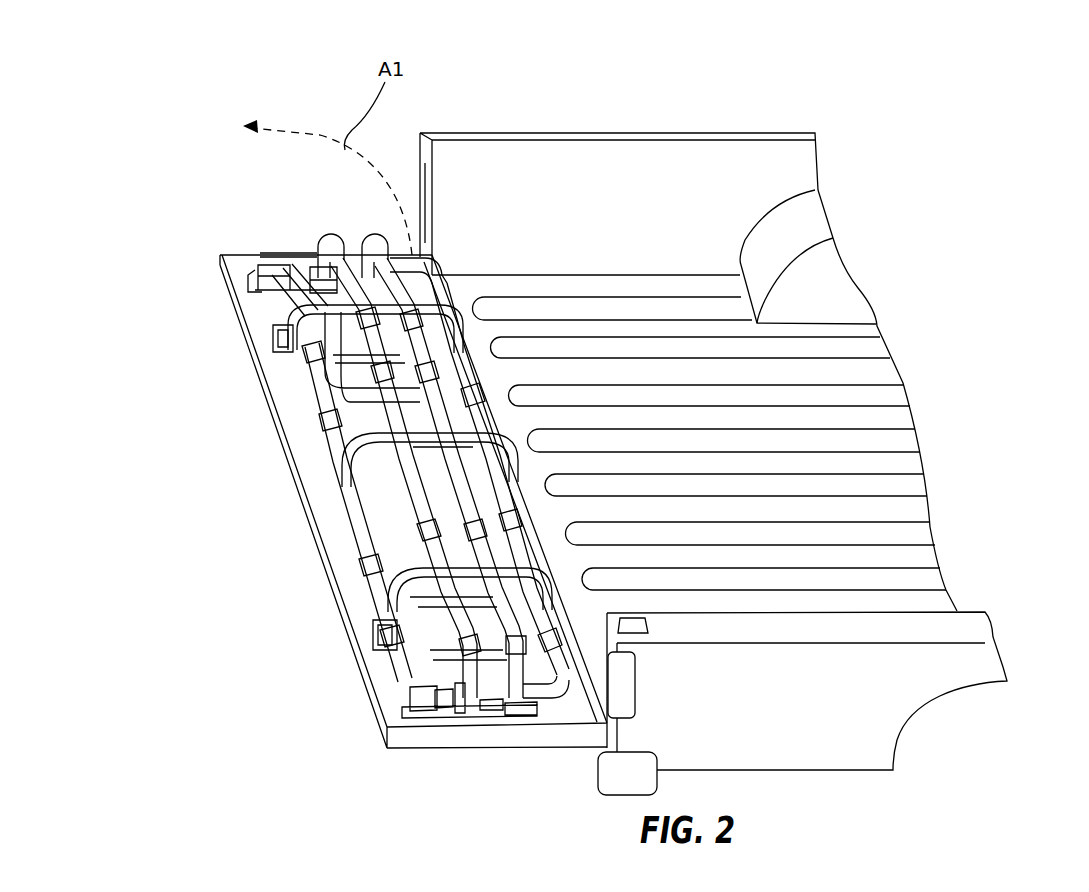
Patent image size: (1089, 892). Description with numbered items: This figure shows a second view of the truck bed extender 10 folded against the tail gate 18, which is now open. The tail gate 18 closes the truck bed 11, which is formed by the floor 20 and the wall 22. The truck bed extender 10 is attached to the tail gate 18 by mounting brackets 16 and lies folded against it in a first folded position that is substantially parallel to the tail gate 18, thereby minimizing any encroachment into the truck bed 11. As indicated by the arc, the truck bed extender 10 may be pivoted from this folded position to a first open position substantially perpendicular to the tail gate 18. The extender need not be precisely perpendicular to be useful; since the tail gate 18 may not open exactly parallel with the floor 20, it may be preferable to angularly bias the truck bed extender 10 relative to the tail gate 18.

The truck bed extender 10 is at (340, 450).
The truck bed 11 is at (952, 173).
The mounting brackets 16 is at (262, 288).
The tail gate 18 is at (340, 570).
The floor 20 is at (710, 443).
The wall 22 is at (656, 229).